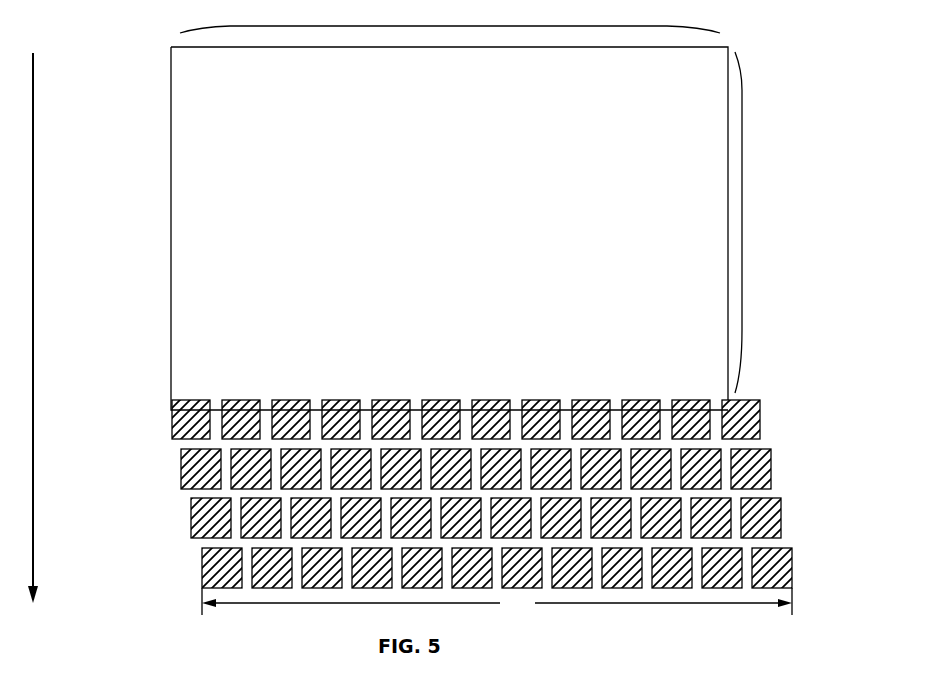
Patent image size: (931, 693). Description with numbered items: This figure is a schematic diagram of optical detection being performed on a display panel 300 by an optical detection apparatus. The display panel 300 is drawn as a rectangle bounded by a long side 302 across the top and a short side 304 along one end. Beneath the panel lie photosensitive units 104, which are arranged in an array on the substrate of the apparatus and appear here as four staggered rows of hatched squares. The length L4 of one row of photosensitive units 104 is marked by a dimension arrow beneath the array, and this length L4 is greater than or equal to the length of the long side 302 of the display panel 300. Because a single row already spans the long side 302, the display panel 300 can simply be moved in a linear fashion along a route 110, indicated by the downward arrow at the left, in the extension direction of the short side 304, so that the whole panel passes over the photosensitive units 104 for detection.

The route 110 is at (53, 328).
The display panel 300 is at (171, 229).
The long side 302 is at (449, 26).
The short side 304 is at (742, 223).
The photosensitive units 104 is at (171, 418).
The length of one row of photosensitive units L4 is at (497, 602).